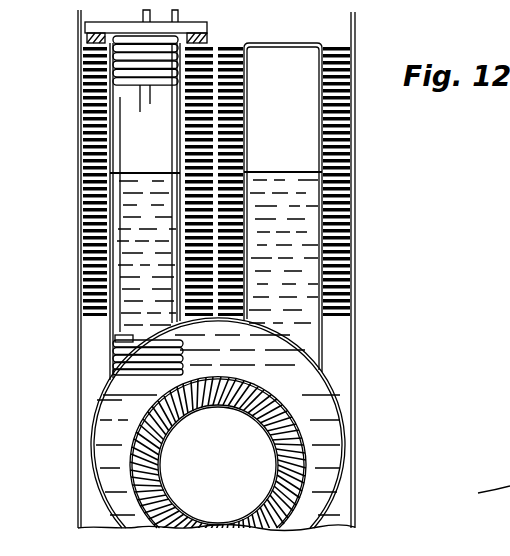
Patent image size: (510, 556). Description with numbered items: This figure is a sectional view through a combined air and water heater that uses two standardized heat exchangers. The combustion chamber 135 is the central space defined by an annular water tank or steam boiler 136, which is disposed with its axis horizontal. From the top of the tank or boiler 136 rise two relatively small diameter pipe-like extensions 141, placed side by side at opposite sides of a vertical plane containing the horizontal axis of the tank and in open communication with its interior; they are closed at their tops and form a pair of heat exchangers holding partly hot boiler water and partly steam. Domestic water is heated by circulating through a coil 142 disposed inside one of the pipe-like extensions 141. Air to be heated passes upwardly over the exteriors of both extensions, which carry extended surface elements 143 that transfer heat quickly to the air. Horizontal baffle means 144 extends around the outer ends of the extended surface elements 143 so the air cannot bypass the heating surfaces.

The combustion chamber 135 is at (235, 450).
The annular water tank or steam boiler 136 is at (342, 408).
The pipe-like extensions 141 is at (161, 166).
The coil 142 is at (138, 95).
The extended surface elements 143 is at (88, 171).
The baffle means 144 is at (244, 172).